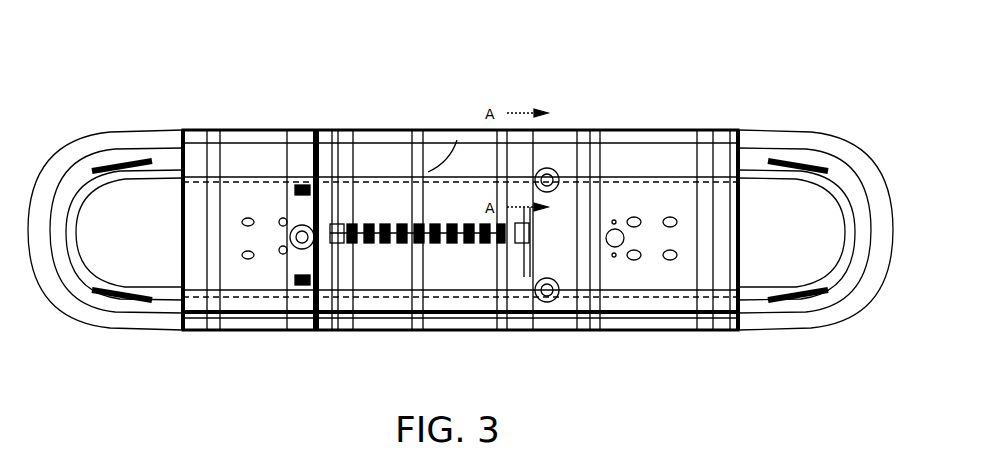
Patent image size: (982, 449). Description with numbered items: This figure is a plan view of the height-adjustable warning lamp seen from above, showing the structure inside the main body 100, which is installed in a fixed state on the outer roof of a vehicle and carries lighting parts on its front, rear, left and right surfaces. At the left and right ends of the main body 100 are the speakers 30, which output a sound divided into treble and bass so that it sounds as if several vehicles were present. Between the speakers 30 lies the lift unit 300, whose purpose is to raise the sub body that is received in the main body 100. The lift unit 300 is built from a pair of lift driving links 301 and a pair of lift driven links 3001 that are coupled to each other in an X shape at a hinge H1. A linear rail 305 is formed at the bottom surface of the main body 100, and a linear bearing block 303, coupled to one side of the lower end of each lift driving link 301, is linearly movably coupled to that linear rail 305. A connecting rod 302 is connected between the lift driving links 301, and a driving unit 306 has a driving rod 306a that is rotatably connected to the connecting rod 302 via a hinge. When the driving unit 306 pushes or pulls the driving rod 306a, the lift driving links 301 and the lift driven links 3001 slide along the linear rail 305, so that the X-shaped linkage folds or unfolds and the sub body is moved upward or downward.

The main body 100 is at (680, 130).
The speakers 30 is at (132, 306).
The lift unit 300 is at (296, 110).
The linear rail 305 is at (248, 172).
The lift driving links 301 is at (353, 133).
The lift driven links 3001 is at (392, 132).
The hinge H1 is at (458, 135).
The linear bearing block 303 is at (557, 138).
The driving unit 306 is at (447, 252).
The driving rod 306a is at (524, 262).
The connecting rod 302 is at (556, 272).